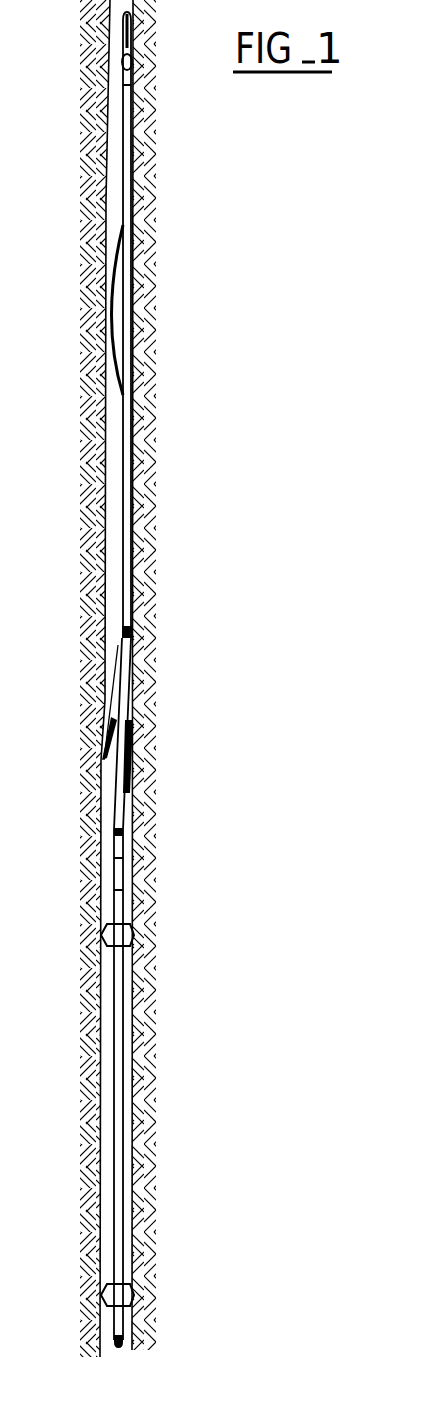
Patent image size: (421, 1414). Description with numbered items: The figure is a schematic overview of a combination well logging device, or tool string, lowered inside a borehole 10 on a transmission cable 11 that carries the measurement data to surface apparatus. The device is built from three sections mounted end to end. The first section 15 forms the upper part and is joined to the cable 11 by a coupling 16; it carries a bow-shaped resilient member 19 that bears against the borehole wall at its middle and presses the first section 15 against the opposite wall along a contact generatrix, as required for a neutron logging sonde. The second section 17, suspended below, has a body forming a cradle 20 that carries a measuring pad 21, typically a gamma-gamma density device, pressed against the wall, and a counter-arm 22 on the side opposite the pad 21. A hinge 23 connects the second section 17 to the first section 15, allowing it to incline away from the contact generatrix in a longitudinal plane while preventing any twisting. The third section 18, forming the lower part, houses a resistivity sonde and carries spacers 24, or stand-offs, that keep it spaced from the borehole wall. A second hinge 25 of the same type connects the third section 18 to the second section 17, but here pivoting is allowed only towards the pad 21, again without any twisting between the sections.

The borehole 10 is at (116, 178).
The transmission cable 11 is at (130, 26).
The first section 15 is at (307, 602).
The coupling 16 is at (127, 73).
The second section 17 is at (308, 607).
The third section 18 is at (305, 1345).
The resilient member 19 is at (110, 318).
The cradle 20 is at (110, 697).
The measuring pad 21 is at (134, 760).
The counter-arm 22 is at (107, 730).
The hinge 23 is at (135, 628).
The spacers 24 is at (135, 935).
The hinge 25 is at (130, 836).